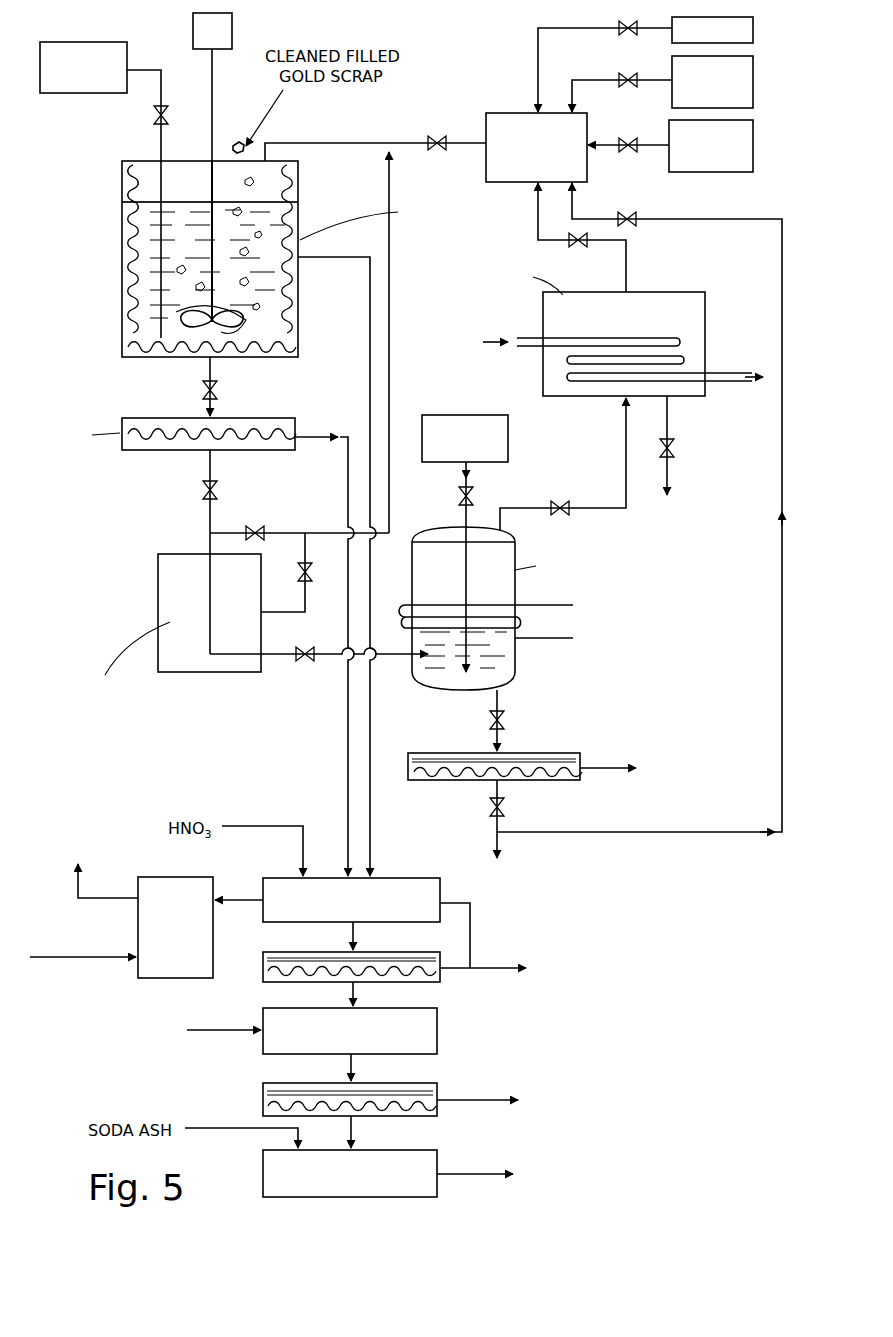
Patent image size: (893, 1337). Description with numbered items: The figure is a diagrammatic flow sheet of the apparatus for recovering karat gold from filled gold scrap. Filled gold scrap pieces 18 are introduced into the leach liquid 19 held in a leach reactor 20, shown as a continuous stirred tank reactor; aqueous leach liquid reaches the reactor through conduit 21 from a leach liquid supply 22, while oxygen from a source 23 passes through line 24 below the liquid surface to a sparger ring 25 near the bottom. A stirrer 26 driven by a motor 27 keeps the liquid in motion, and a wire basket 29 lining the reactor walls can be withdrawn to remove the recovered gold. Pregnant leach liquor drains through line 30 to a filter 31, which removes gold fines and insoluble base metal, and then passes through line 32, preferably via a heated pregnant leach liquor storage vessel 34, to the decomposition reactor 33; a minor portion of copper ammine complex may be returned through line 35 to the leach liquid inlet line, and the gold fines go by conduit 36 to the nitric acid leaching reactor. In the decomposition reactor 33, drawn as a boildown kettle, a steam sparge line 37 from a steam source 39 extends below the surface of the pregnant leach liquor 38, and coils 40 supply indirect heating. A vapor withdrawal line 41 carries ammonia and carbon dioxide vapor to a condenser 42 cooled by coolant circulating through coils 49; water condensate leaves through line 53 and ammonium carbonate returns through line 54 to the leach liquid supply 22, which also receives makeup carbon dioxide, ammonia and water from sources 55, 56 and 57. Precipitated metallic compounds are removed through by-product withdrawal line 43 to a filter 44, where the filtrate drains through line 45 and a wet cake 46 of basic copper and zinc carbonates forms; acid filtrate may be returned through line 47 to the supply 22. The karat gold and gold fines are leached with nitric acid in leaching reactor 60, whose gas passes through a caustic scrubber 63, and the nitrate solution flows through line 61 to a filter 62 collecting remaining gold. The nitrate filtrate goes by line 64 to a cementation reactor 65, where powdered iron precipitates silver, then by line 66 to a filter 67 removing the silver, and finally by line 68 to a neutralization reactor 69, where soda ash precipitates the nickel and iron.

The filled gold scrap pieces 18 is at (237, 144).
The leach liquid 19 is at (150, 238).
The leach reactor 20 is at (301, 224).
The conduit 21 is at (468, 143).
The leach liquid supply 22 is at (494, 118).
The oxygen source 23 is at (78, 43).
The oxygen line 24 is at (160, 141).
The sparger ring 25 is at (185, 313).
The stirrer 26 is at (200, 318).
The motor 27 is at (233, 36).
The wire basket 29 is at (136, 220).
The line 30 is at (206, 372).
The filter 31 is at (240, 420).
The line 32 is at (206, 462).
The decomposition reactor 33 is at (531, 625).
The pregnant leach liquor storage vessel 34 is at (170, 581).
The line 35 is at (391, 380).
The conduit 36 is at (347, 469).
The steam sparge line 37 is at (462, 570).
The pregnant leach liquor 38 is at (500, 670).
The steam source 39 is at (508, 438).
The coils 40 is at (556, 638).
The vapor withdrawal line 41 is at (541, 505).
The condenser 42 is at (593, 350).
The by-product withdrawal line 43 is at (496, 706).
The filter 44 is at (567, 770).
The line 45 is at (494, 790).
The wet cake 46 is at (524, 756).
The line 47 is at (781, 673).
The coils 49 is at (531, 350).
The line 53 is at (670, 421).
The line 54 is at (536, 211).
The carbon dioxide source 55 is at (752, 141).
The ammonia source 56 is at (750, 89).
The water source 57 is at (748, 33).
The leaching reactor 60 is at (422, 887).
The line 61 is at (356, 938).
The filter 62 is at (425, 983).
The caustic scrubber 63 is at (190, 975).
The line 64 is at (356, 997).
The cementation reactor 65 is at (430, 1044).
The line 66 is at (353, 1068).
The filter 67 is at (425, 1118).
The line 68 is at (353, 1135).
The neutralization reactor 69 is at (428, 1190).